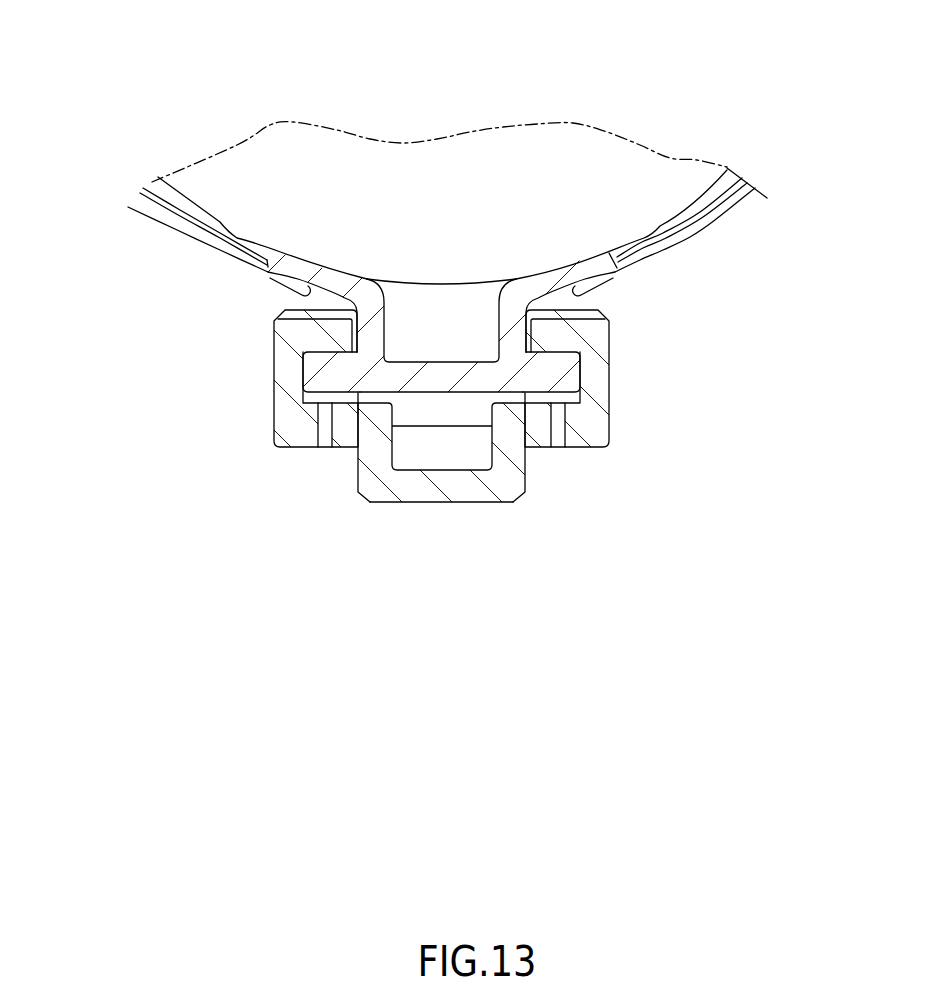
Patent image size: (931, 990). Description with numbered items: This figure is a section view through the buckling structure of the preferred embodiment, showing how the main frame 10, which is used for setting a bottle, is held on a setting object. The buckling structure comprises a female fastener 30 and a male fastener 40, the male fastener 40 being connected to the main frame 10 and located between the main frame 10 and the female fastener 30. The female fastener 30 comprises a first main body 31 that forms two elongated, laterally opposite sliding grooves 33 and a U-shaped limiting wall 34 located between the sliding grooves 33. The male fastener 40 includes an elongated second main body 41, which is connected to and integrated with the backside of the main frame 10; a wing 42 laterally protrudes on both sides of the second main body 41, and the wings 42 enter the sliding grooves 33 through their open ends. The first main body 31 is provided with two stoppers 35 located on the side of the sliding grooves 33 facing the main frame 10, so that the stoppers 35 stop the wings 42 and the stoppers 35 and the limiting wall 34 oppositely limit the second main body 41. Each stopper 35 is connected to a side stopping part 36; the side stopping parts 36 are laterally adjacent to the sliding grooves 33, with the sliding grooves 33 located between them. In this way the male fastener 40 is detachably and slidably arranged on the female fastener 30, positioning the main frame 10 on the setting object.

The main frame 10 is at (182, 233).
The female fastener 30 is at (526, 513).
The first main body 31 is at (457, 504).
The sliding grooves 33 is at (562, 400).
The limiting wall 34 is at (372, 403).
The stoppers 35 is at (558, 332).
The side stopping part 36 is at (597, 406).
The male fastener 40 is at (438, 349).
The second main body 41 is at (461, 362).
The wing 42 is at (555, 377).